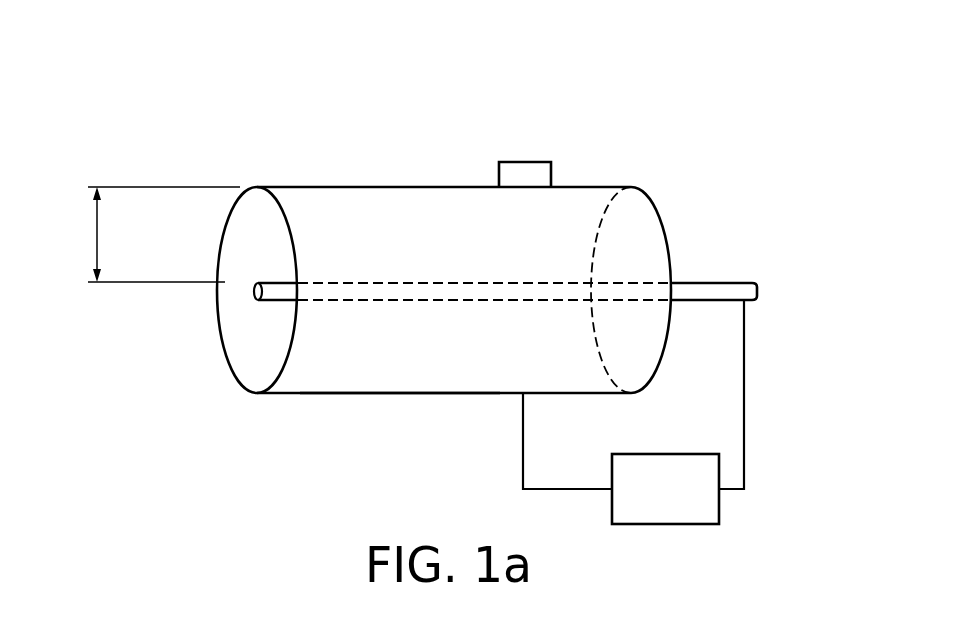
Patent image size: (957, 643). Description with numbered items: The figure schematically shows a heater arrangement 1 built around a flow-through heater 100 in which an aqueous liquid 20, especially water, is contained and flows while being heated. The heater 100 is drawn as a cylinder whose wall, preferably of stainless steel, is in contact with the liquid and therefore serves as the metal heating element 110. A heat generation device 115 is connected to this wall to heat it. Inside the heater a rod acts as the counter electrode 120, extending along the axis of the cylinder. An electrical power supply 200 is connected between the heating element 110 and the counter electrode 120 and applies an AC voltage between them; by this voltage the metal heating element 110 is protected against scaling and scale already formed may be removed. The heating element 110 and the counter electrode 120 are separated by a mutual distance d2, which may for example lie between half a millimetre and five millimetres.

The heater arrangement 1 is at (355, 160).
The aqueous liquid 20 is at (250, 240).
The heater 100 is at (222, 392).
The heating element 110 is at (394, 395).
The heat generation device 115 is at (523, 170).
The counter electrode 120 is at (710, 285).
The electrical power supply 200 is at (740, 512).
The distance d2 is at (148, 234).